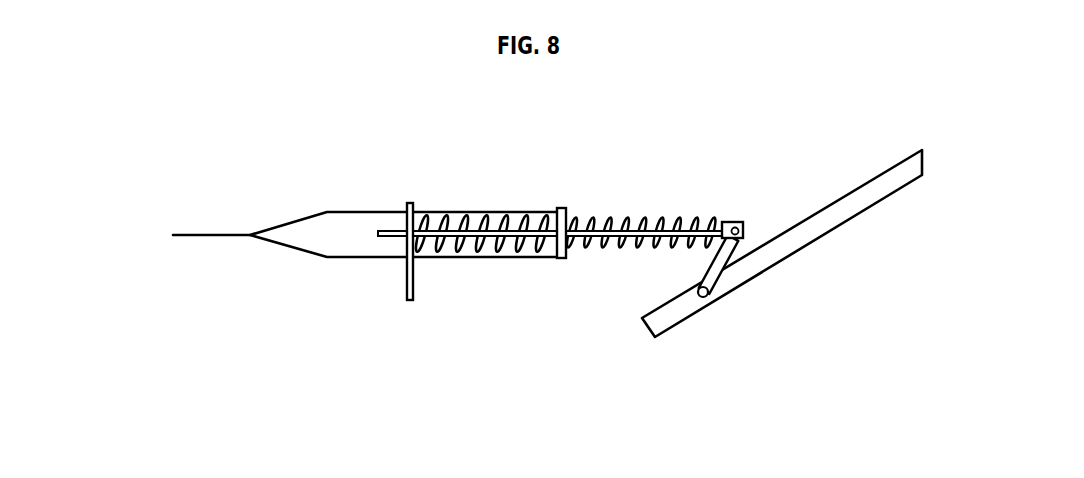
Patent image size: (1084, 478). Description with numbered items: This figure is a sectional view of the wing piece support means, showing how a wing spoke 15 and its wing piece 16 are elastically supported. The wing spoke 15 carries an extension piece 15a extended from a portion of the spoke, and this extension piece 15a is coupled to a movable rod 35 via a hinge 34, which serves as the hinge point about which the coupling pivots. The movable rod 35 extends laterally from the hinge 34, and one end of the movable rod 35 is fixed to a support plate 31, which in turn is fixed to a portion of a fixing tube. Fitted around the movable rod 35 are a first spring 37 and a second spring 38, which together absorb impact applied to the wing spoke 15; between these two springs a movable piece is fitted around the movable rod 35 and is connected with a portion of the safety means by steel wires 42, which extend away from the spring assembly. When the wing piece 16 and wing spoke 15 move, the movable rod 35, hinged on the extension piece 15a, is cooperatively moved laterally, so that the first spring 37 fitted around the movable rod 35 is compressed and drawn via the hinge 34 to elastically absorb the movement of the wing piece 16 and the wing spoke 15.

The steel wires 42 is at (288, 221).
The movable rod 35 is at (387, 226).
The second spring 38 is at (505, 227).
The first spring 37 is at (623, 222).
The hinge 34 is at (730, 222).
The support plate 31 is at (407, 279).
The wing piece 16 is at (820, 237).
The extension piece 15a is at (713, 277).
The wing spoke 15 is at (705, 297).